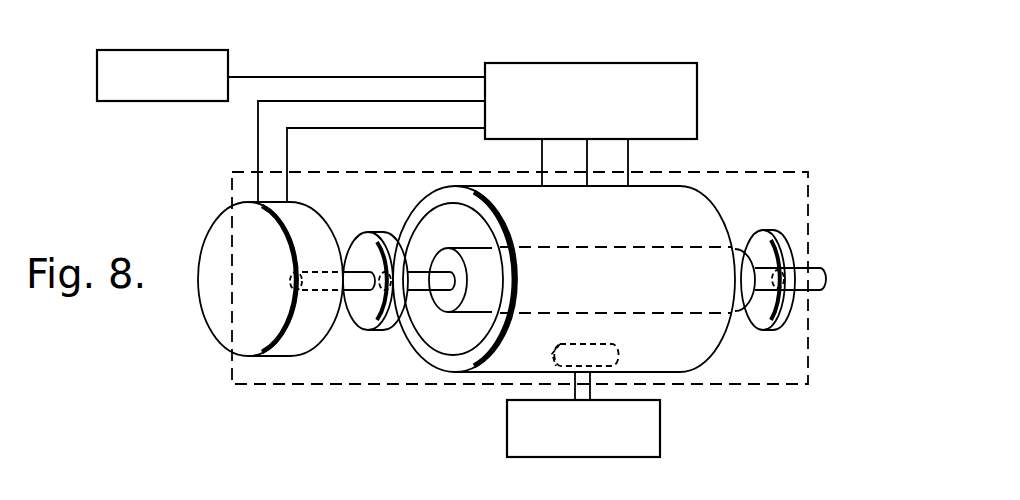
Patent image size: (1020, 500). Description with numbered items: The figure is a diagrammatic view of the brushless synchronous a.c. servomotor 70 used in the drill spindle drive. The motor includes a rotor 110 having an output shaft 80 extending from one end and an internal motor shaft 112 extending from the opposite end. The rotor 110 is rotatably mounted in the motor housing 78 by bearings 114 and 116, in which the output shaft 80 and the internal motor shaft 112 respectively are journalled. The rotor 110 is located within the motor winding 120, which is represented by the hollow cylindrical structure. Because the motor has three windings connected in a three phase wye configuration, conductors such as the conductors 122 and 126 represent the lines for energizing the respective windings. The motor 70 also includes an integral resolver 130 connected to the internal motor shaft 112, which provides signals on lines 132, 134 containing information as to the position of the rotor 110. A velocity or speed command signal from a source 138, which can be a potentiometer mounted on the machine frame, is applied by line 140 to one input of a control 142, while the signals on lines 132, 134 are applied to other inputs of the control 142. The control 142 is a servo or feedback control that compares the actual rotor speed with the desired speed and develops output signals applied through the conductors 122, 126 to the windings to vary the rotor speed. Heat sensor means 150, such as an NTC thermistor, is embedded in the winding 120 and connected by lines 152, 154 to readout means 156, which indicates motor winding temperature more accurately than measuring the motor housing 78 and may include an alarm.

The brushless synchronous a.c. servomotor 70 is at (795, 158).
The motor housing 78 is at (741, 170).
The output shaft 80 is at (818, 269).
The rotor 110 is at (582, 247).
The internal motor shaft 112 is at (423, 292).
The bearing 114 is at (793, 325).
The bearing 116 is at (360, 310).
The motor winding 120 is at (716, 355).
The conductor 122 is at (542, 155).
The conductor 126 is at (587, 155).
The resolver 130 is at (216, 315).
The line 132 is at (258, 142).
The line 134 is at (287, 150).
The velocity command signal source 138 is at (152, 50).
The line 140 is at (346, 76).
The control 142 is at (608, 63).
The heat sensor means 150 is at (579, 344).
The line 152 is at (575, 385).
The line 154 is at (590, 388).
The readout means 156 is at (507, 432).